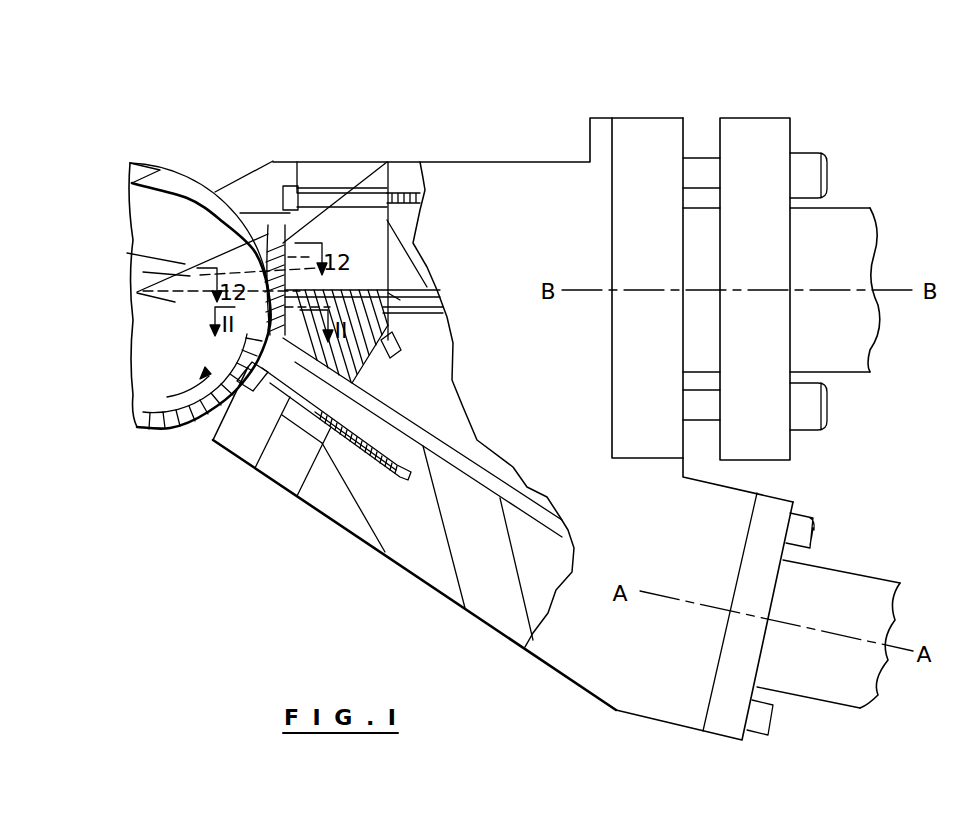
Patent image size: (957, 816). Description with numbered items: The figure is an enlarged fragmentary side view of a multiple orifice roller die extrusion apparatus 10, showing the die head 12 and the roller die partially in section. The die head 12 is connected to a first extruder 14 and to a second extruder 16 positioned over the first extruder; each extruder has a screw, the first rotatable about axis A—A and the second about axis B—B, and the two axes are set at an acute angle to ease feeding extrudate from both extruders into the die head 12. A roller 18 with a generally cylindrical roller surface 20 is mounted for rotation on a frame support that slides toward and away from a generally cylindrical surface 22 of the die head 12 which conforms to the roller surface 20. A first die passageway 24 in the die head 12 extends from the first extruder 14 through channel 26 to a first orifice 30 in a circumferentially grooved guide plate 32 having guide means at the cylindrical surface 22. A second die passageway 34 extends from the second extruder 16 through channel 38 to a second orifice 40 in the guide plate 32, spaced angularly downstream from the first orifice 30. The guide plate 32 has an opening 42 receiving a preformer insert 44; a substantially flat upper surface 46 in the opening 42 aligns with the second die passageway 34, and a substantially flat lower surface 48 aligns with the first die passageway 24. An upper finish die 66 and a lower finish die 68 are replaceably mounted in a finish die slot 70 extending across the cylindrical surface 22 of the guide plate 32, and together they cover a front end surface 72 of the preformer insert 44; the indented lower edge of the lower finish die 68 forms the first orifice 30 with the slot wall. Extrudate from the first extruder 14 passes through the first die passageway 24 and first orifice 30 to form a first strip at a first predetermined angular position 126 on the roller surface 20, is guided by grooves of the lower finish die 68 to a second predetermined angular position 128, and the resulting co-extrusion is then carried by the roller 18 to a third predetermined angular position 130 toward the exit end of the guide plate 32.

The multiple orifice roller die extrusion apparatus 10 is at (529, 128).
The die head 12 is at (484, 172).
The first extruder 14 is at (855, 590).
The second extruder 16 is at (862, 215).
The roller 18 is at (172, 174).
The cylindrical roller surface 20 is at (170, 425).
The cylindrical surface 22 is at (240, 348).
The first die passageway 24 is at (470, 472).
The channel 26 is at (213, 440).
The first orifice 30 is at (250, 340).
The guide plate 32 is at (317, 172).
The second die passageway 34 is at (427, 297).
The channel 38 is at (348, 290).
The second orifice 40 is at (235, 256).
The opening 42 is at (400, 300).
The preformer insert 44 is at (388, 330).
The upper surface 46 is at (370, 296).
The lower surface 48 is at (348, 390).
The upper finish die 66 is at (280, 243).
The lower finish die 68 is at (220, 333).
The finish die slot 70 is at (272, 233).
The front end surface 72 is at (283, 243).
The first predetermined angular position 126 is at (137, 296).
The second predetermined angular position 128 is at (143, 272).
The third predetermined angular position 130 is at (130, 253).